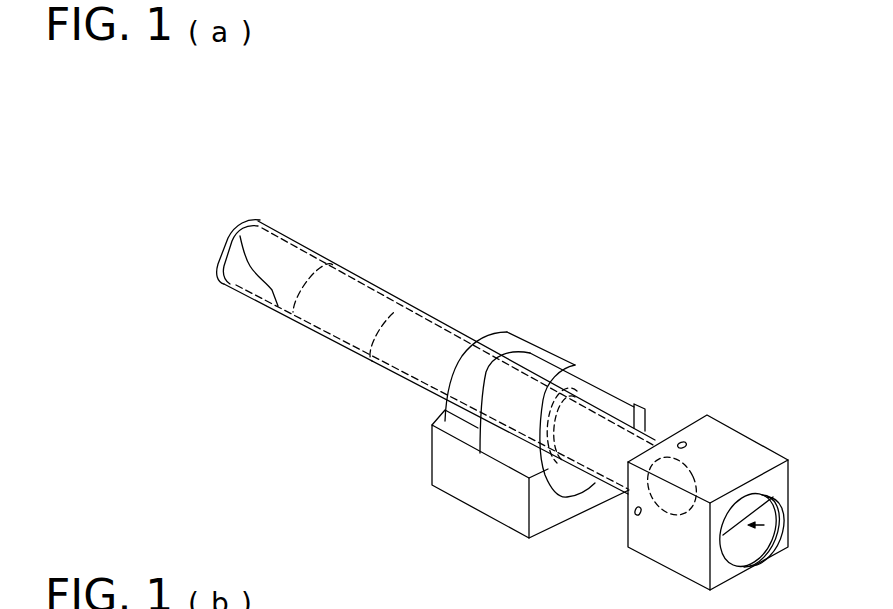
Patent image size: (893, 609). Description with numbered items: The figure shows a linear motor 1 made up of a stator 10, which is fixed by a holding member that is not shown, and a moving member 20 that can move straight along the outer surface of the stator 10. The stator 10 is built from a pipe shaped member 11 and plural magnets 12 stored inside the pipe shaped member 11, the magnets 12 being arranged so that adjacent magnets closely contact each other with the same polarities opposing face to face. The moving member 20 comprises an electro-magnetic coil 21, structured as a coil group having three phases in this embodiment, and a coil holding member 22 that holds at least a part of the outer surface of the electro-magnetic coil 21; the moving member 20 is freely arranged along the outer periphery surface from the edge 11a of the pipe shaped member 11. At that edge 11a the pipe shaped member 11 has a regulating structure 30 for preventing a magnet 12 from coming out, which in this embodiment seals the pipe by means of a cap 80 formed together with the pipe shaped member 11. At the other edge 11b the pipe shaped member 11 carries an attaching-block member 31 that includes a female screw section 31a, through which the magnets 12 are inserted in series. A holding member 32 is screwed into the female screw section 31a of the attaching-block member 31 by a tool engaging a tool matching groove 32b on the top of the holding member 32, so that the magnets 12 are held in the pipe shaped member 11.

The linear motor 1 is at (499, 181).
The stator 10 is at (408, 284).
The pipe shaped member 11 is at (373, 363).
The edge of pipe shaped member 11a is at (263, 221).
The other edge of pipe shaped member 11b is at (652, 440).
The magnet 12 is at (334, 272).
The moving member 20 is at (559, 332).
The electro-magnetic coil 21 is at (590, 380).
The coil holding member 22 is at (482, 488).
The regulating structure 30 is at (213, 238).
The attaching-block member 31 is at (675, 560).
The female screw section 31a is at (762, 560).
The holding member 32 is at (781, 515).
The tool matching groove 32b is at (745, 507).
The cap 80 is at (219, 262).